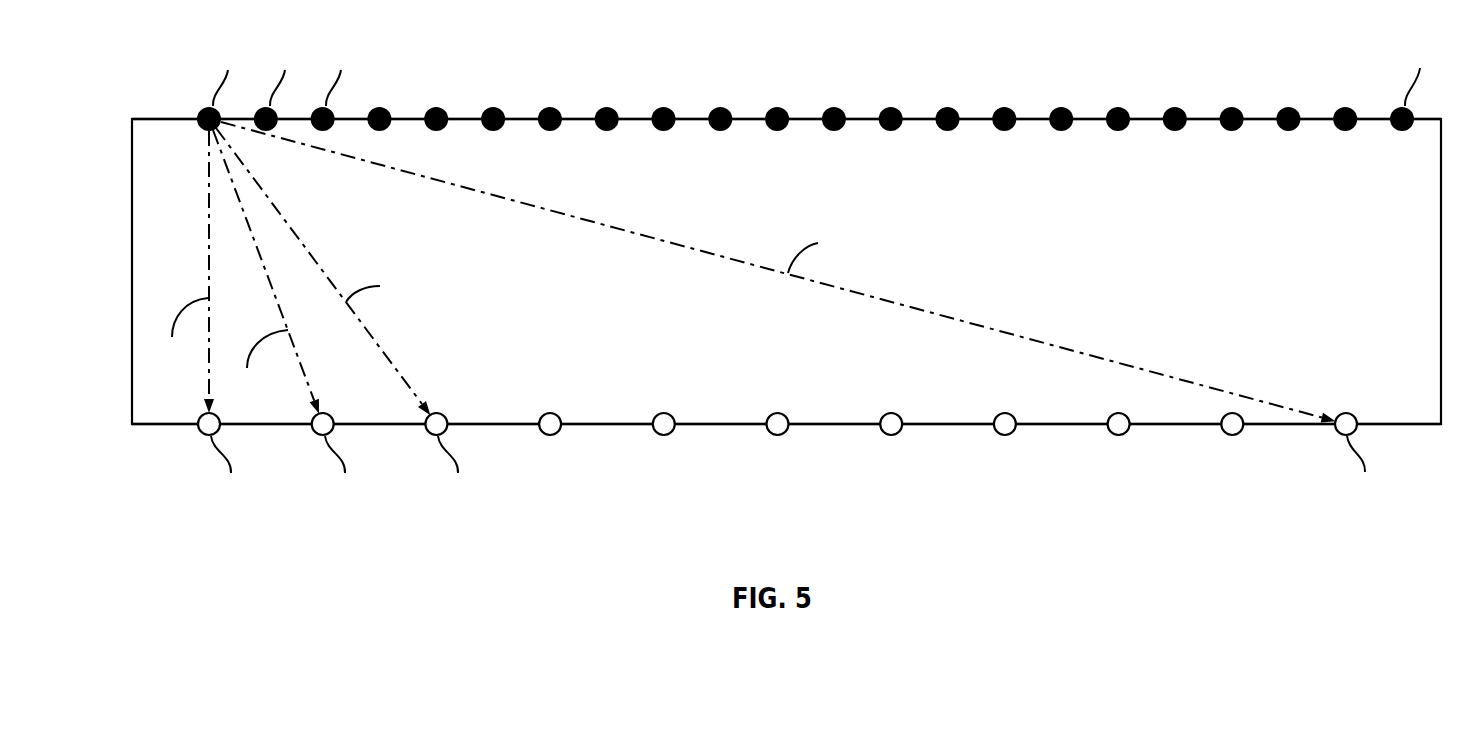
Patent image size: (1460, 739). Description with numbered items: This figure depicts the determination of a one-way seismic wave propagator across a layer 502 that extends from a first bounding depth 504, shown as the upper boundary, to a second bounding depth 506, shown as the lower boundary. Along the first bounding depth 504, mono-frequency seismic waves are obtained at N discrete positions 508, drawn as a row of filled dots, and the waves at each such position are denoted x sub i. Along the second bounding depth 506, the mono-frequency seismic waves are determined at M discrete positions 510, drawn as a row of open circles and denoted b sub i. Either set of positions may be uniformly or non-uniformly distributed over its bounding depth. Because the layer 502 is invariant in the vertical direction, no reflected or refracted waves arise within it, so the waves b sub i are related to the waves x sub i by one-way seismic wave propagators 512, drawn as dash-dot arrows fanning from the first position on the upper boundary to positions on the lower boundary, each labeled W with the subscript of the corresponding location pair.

The layer 502 is at (1302, 267).
The first bounding depth 504 is at (143, 118).
The second bounding depth 506 is at (148, 428).
The N discrete positions 508 is at (834, 107).
The M discrete positions 510 is at (891, 436).
The one-way seismic wave propagators 512 is at (209, 244).